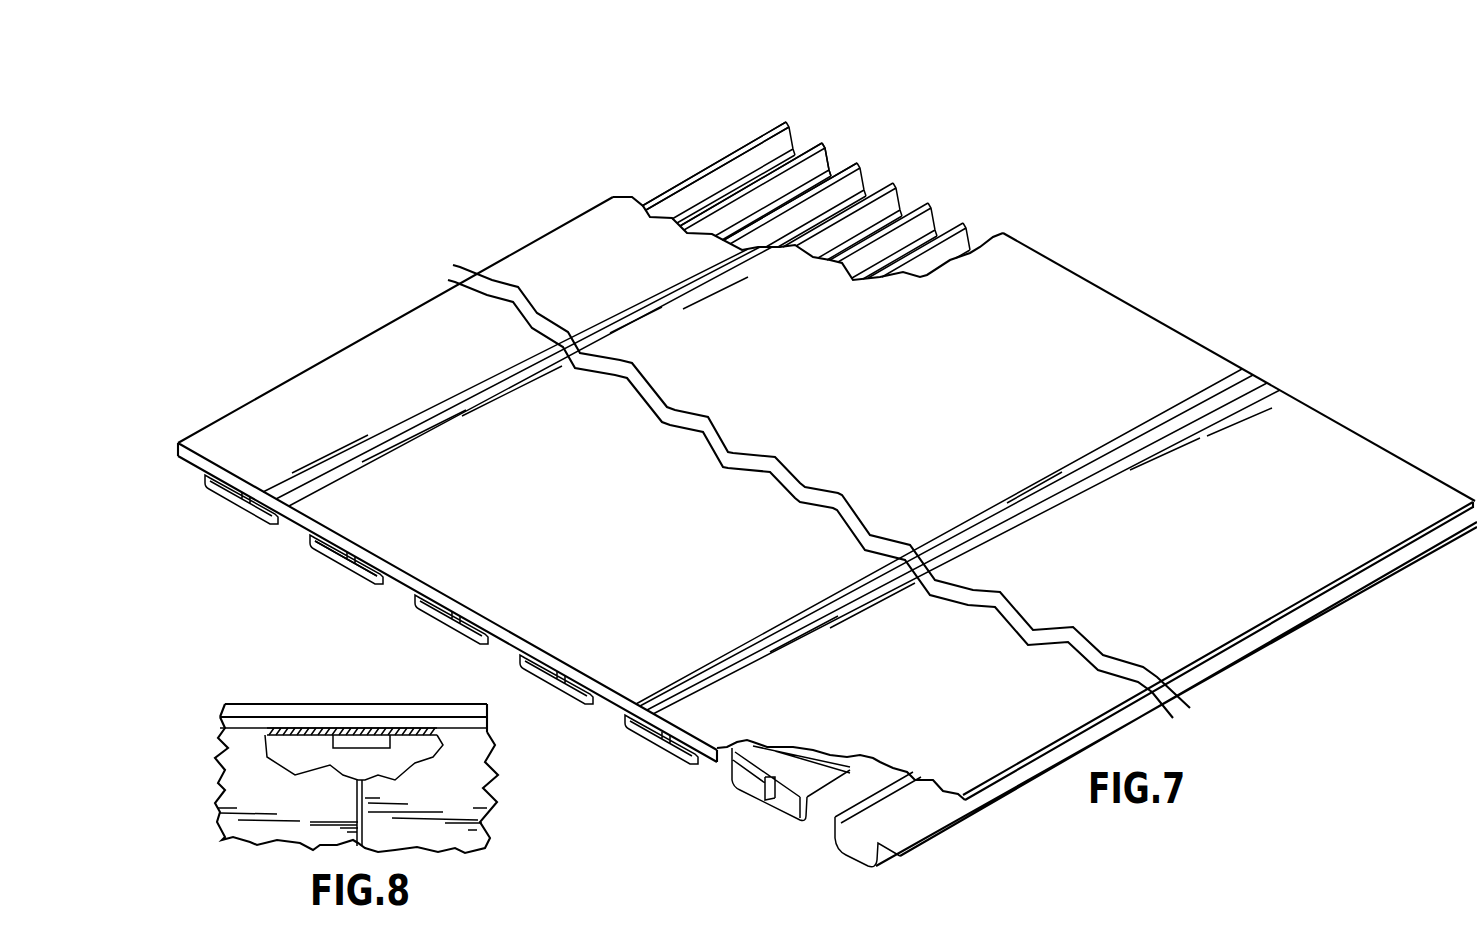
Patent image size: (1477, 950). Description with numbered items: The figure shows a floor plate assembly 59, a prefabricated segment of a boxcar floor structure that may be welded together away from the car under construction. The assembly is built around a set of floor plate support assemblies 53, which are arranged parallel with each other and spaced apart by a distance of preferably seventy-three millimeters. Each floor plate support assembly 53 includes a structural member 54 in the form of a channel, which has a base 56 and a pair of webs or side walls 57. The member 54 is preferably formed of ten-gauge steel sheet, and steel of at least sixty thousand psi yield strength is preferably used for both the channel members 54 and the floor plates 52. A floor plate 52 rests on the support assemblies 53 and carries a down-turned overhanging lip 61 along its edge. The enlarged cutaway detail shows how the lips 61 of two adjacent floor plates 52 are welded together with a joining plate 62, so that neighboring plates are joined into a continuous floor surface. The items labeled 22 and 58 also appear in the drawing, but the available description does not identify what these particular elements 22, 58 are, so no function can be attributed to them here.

In FIG. 8, the face sheet 22 is at (250, 717).
In FIG. 7, the floor plate 52 is at (1335, 440).
In FIG. 8, the floor plate 52 is at (232, 802).
In FIG. 7, the floor plate support assembly 53 is at (697, 172).
In FIG. 7, the structural member 54 is at (760, 136).
In FIG. 7, the base 56 is at (798, 150).
In FIG. 7, the side wall 57 is at (793, 133).
In FIG. 7, the rib foot 58 is at (831, 152).
In FIG. 7, the floor plate assembly 59 is at (1185, 270).
In FIG. 7, the down-turned overhanging lip 61 is at (1475, 498).
In FIG. 8, the down-turned overhanging lip 61 is at (303, 727).
In FIG. 8, the joining plate 62 is at (347, 778).